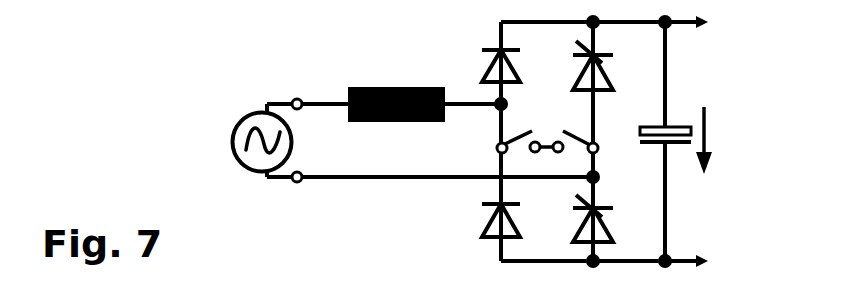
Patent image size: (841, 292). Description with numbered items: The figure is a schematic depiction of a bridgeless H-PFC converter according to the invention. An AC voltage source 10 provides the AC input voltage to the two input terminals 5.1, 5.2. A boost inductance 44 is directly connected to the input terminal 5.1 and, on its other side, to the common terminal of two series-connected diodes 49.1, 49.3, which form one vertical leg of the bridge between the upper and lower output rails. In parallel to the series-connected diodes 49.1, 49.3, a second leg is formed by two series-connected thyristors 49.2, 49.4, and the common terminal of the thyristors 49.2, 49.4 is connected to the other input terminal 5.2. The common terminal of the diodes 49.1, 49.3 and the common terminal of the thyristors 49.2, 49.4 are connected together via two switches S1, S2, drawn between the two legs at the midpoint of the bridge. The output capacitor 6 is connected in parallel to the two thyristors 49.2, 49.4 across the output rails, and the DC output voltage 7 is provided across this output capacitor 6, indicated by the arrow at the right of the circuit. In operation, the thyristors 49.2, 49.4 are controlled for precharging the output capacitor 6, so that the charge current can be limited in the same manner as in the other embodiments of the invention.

The voltage source 10 is at (243, 120).
The input terminal 5.1 is at (291, 98).
The input terminal 5.2 is at (291, 183).
The boost inductance 44 is at (398, 86).
The diode 49.1 is at (488, 62).
The thyristor 49.2 is at (606, 75).
The diode 49.3 is at (485, 226).
The thyristor 49.4 is at (612, 233).
The switch S1 is at (503, 136).
The switch S2 is at (583, 136).
The output capacitor 6 is at (674, 124).
The DC output voltage 7 is at (707, 128).